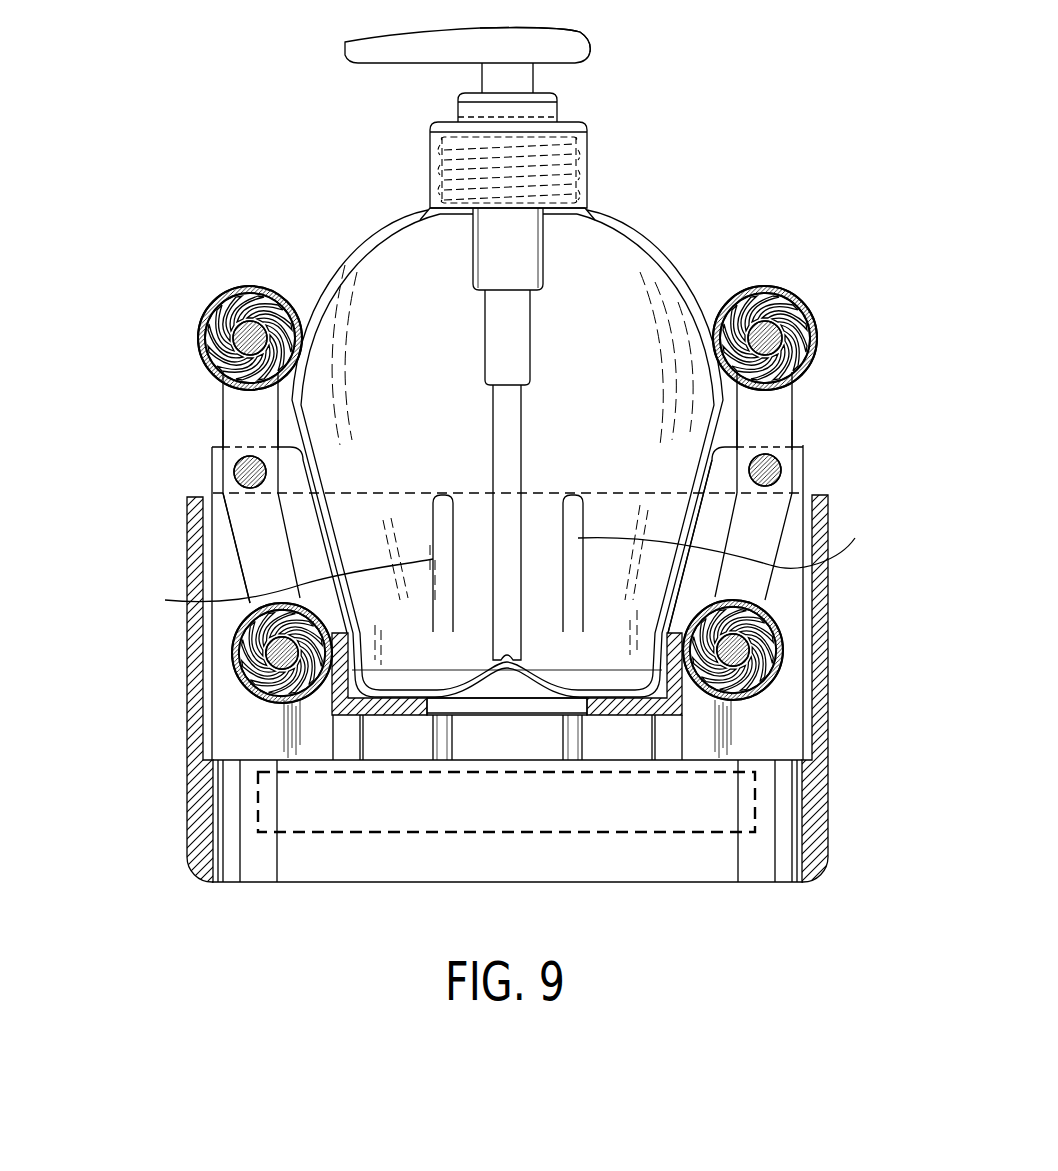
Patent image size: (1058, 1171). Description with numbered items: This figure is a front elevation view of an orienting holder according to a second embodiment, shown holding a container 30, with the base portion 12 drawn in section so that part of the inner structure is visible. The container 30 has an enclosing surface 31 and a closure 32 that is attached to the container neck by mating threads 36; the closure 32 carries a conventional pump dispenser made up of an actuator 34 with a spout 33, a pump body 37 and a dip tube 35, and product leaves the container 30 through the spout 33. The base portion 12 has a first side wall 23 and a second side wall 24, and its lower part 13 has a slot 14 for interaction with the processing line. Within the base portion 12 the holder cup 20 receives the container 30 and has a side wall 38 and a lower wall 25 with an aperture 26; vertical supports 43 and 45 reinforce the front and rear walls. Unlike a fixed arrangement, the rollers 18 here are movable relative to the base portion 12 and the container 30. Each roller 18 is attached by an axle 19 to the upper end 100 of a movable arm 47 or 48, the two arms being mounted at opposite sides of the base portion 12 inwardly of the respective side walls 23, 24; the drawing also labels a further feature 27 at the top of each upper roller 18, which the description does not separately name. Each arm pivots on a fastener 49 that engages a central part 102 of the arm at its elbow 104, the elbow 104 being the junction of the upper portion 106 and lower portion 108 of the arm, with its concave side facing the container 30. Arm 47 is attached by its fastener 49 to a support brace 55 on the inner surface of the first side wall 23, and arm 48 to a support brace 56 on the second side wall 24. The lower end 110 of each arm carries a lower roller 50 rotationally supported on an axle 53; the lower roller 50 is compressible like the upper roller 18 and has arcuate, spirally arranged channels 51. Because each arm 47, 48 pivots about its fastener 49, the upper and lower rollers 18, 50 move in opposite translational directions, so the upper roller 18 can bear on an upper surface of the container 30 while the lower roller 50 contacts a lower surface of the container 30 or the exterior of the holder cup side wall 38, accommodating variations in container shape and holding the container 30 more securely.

The base portion 12 is at (511, 691).
The lower part 13 is at (240, 820).
The slot 14 is at (662, 813).
The rollers 18 is at (200, 340).
The axles 19 is at (235, 325).
The holder cup 20 is at (343, 717).
The first side wall 23 is at (195, 500).
The second side wall 24 is at (830, 825).
The lower wall 25 is at (610, 720).
The aperture 26 is at (493, 704).
The roller fins 27 is at (257, 285).
The container 30 is at (527, 431).
The enclosing surface 31 is at (643, 233).
The closure 32 is at (509, 150).
The spout 33 is at (458, 46).
The actuator 34 is at (590, 42).
The dip tube 35 is at (493, 410).
The mating threads 36 is at (440, 152).
The pump body 37 is at (542, 252).
The side wall 38 is at (601, 781).
The vertical support 43 is at (281, 584).
The vertical support 45 is at (732, 545).
The movable arm 47 is at (233, 413).
The movable arm 48 is at (782, 410).
The fastener 49 is at (237, 468).
The lower roller 50 is at (268, 652).
The channels 51 is at (265, 668).
The axle 53 is at (260, 695).
The support brace 55 is at (245, 567).
The support brace 56 is at (820, 520).
The upper end 100 is at (243, 307).
The central part 102 is at (233, 490).
The elbow 104 is at (212, 480).
The upper portion 106 is at (233, 433).
The lower portion 108 is at (222, 600).
The lower end 110 is at (252, 655).